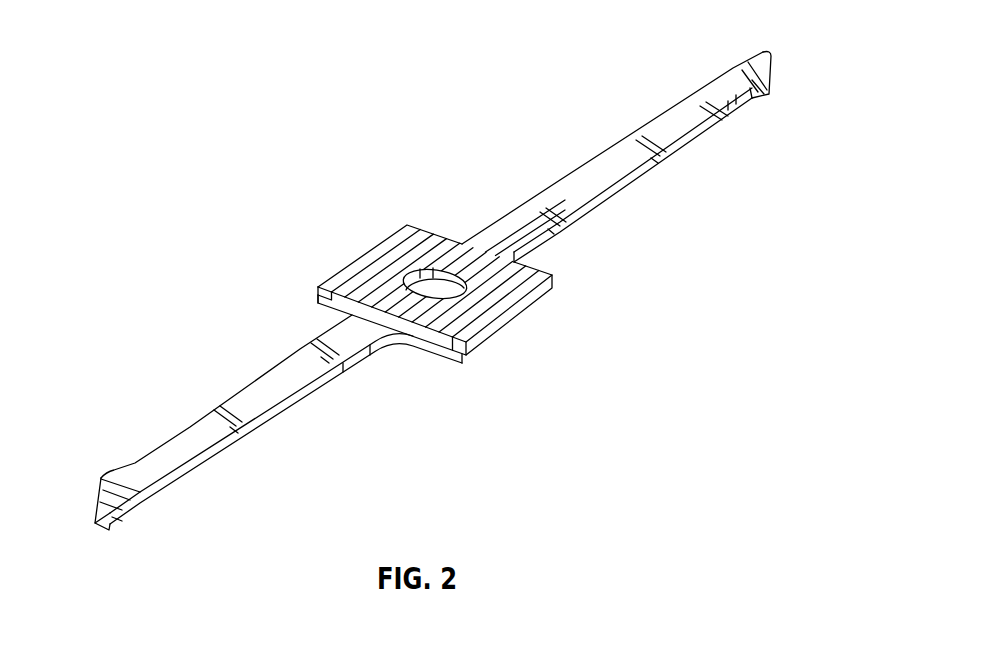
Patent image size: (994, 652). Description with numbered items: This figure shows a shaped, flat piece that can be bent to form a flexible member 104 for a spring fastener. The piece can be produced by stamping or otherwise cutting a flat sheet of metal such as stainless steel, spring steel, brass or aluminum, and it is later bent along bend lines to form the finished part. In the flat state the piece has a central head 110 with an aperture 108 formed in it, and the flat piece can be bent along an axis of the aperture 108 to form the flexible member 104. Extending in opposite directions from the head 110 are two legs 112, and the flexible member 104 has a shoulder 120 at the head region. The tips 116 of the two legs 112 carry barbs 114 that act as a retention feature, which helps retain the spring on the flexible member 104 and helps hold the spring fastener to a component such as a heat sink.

The flexible member 104 is at (178, 104).
The aperture 108 is at (449, 268).
The head 110 is at (489, 319).
The legs 112 is at (264, 390).
The barbs 114 is at (108, 476).
The tips 116 is at (100, 505).
The shoulder 120 is at (417, 233).